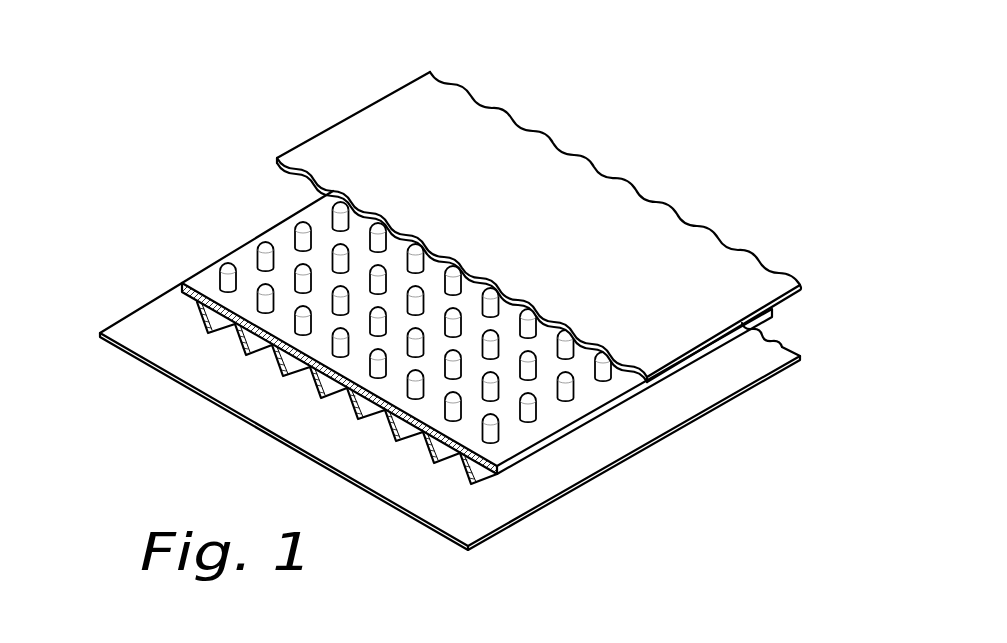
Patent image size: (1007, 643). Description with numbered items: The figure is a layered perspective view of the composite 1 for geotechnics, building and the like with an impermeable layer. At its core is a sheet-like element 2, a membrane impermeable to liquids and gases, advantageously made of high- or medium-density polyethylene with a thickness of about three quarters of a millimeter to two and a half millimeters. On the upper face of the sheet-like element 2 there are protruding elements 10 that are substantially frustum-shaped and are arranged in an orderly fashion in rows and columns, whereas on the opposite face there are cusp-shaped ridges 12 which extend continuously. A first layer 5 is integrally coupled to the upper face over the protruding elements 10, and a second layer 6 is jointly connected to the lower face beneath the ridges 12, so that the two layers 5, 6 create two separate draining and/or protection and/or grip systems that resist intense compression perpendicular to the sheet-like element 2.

The composite 1 is at (165, 168).
The sheet-like element 2 is at (204, 280).
The first layer 5 is at (323, 142).
The second layer 6 is at (140, 322).
The protruding elements 10 is at (303, 224).
The cusp-shaped ridges 12 is at (240, 356).